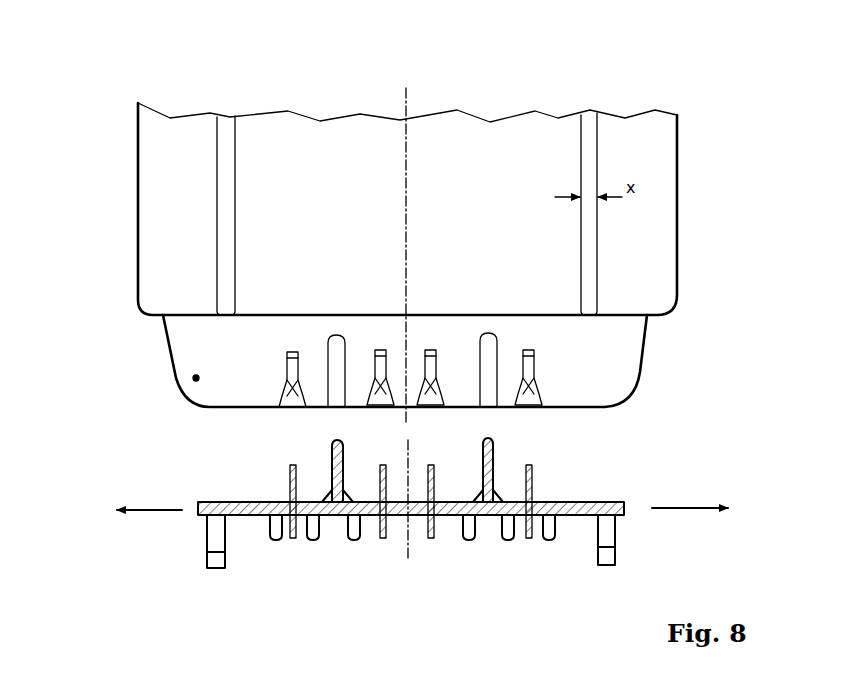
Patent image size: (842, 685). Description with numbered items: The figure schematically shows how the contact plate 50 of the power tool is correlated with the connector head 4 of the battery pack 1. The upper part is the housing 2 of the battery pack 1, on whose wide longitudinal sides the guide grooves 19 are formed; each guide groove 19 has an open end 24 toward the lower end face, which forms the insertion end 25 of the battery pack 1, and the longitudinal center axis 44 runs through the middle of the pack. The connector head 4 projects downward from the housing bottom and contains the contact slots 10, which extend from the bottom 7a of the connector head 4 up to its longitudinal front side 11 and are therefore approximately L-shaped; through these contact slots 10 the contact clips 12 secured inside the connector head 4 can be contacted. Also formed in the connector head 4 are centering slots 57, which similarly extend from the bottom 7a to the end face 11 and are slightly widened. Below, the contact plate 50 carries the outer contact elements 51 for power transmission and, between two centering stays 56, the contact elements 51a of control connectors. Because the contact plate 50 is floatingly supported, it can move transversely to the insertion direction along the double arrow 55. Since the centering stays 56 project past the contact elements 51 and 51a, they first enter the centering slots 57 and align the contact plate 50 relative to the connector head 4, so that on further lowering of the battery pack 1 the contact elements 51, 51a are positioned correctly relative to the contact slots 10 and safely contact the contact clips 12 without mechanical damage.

The battery pack 1 is at (122, 97).
The housing 2 is at (138, 213).
The connector head 4 is at (120, 333).
The bottom of the connector head 7a is at (210, 406).
The contact slot 10 is at (288, 406).
The longitudinal front side 11 is at (194, 380).
The contact clip 12 is at (293, 392).
The guide groove 19 is at (226, 147).
The open end of the guide groove 24 is at (225, 315).
The insertion end 25 is at (676, 280).
The longitudinal center axis 44 is at (407, 88).
The contact plate 50 is at (608, 500).
The contact element 51 is at (290, 472).
The contact element of control connector 51a is at (412, 514).
The double arrow 55 is at (150, 512).
The centering stay 56 is at (332, 455).
The centering slot 57 is at (338, 392).